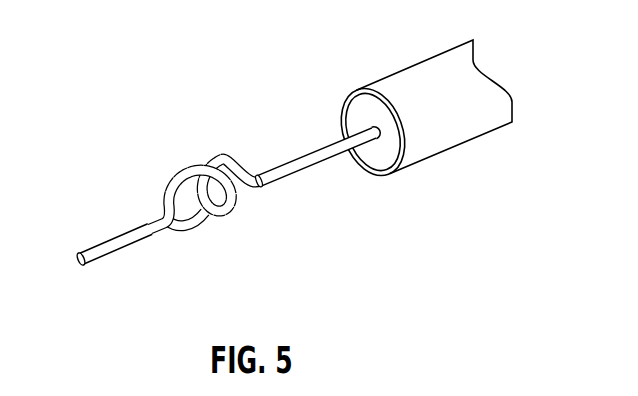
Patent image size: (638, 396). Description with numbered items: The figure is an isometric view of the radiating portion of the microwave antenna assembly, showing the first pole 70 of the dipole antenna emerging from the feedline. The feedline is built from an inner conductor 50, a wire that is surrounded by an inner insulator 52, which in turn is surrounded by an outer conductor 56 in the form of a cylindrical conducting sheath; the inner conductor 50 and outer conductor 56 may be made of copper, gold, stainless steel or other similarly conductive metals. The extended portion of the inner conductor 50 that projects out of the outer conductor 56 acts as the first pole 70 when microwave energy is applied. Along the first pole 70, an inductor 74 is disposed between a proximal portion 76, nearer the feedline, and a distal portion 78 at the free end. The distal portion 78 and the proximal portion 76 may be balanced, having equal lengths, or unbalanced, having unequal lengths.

The inner conductor 50 is at (286, 146).
The inner insulator 52 is at (358, 114).
The outer conductor 56 is at (402, 105).
The first pole 70 is at (220, 164).
The inductor 74 is at (192, 168).
The proximal portion 76 is at (315, 150).
The distal portion 78 is at (115, 238).